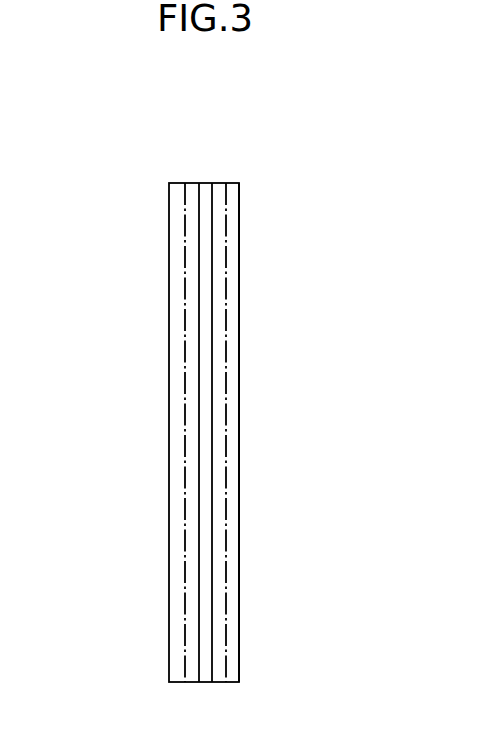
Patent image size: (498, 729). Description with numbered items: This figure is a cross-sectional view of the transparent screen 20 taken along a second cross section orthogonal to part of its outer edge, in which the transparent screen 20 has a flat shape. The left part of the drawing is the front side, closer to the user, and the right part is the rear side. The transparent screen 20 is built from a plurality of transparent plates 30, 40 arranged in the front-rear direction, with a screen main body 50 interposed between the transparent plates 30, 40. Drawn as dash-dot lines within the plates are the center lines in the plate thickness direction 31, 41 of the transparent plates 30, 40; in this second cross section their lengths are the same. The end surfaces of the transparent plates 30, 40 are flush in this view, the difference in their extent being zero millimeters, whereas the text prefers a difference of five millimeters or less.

The transparent screen 20 is at (140, 127).
The transparent plate 30 is at (178, 192).
The center line in the plate thickness direction 31 is at (183, 433).
The transparent plate 40 is at (232, 192).
The center line in the plate thickness direction 41 is at (228, 433).
The screen main body 50 is at (202, 192).